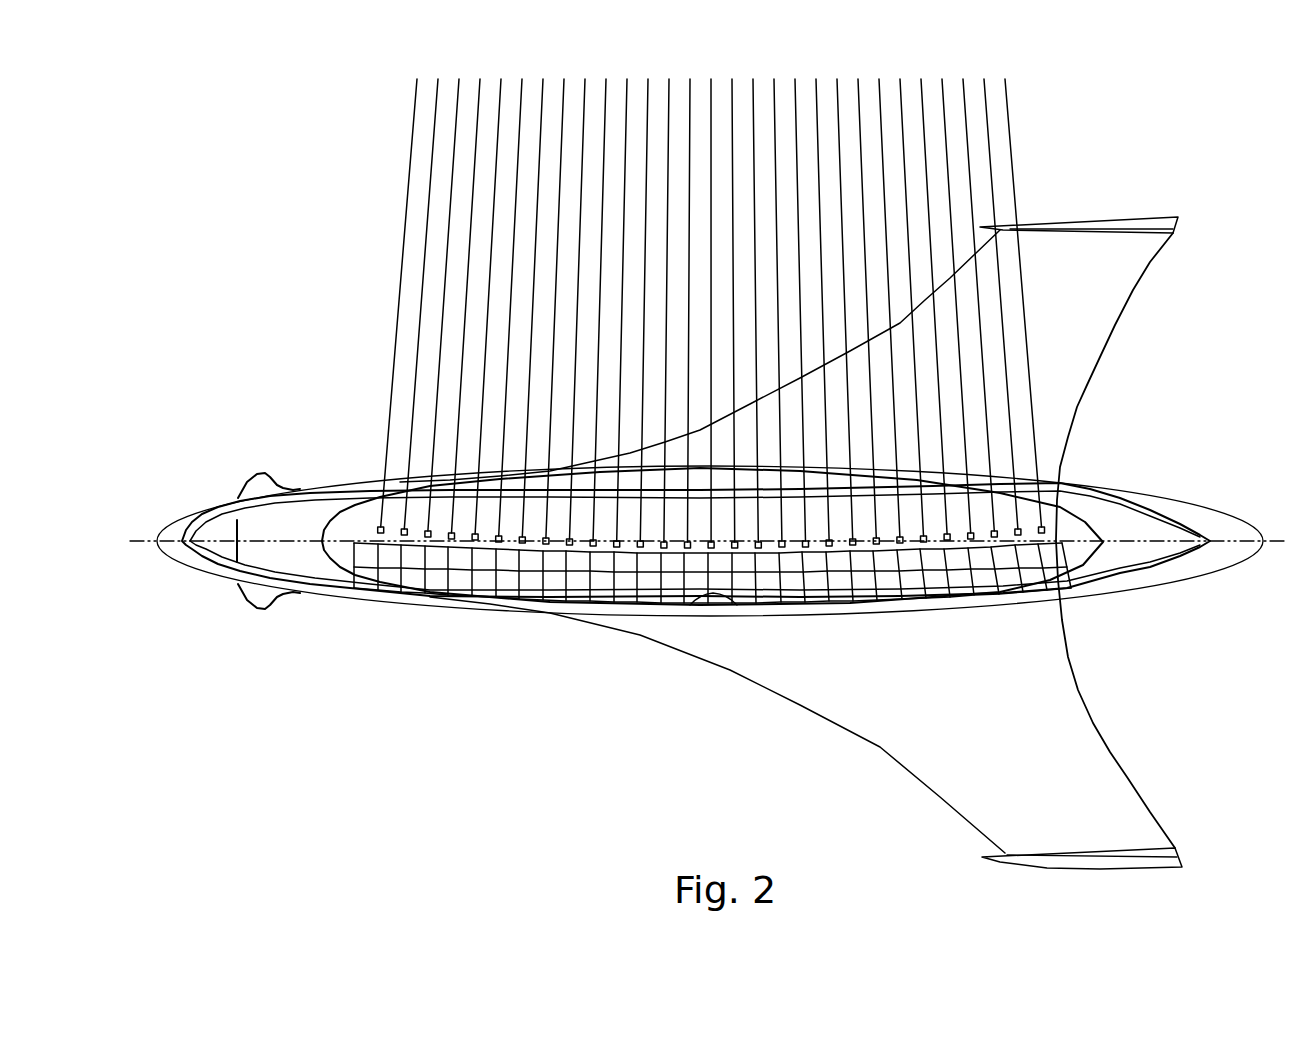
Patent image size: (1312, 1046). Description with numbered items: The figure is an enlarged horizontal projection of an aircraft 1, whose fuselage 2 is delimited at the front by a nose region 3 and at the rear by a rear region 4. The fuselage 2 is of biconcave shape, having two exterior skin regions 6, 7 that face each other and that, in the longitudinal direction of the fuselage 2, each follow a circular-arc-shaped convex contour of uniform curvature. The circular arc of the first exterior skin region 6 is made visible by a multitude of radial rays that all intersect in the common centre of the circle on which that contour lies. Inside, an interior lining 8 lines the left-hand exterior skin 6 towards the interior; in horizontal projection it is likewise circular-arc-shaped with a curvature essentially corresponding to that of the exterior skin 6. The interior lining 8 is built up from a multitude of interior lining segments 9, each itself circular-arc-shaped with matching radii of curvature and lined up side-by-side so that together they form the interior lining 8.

The aircraft 1 is at (707, 642).
The fuselage 2 is at (712, 589).
The nose region 3 is at (226, 588).
The rear region 4 is at (1115, 543).
The first exterior skin region 6 is at (717, 723).
The second exterior skin region 7 is at (700, 356).
The interior lining 8 is at (712, 624).
The interior lining segments 9 is at (696, 625).